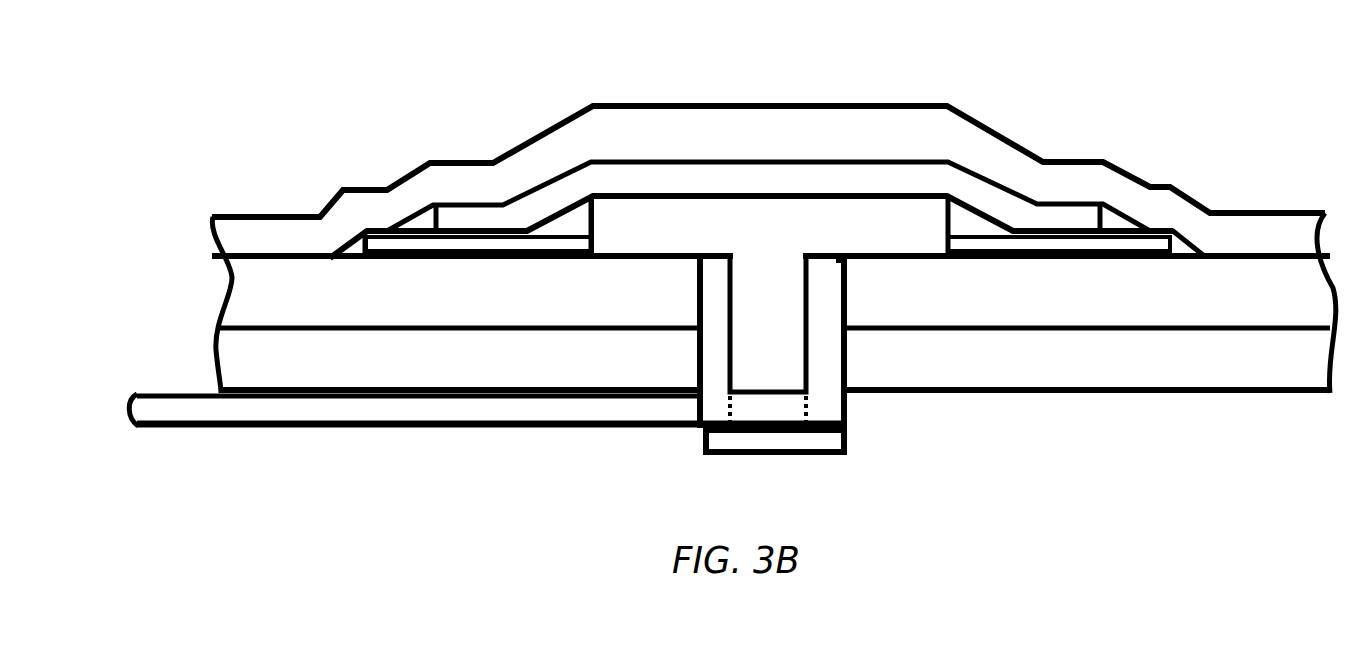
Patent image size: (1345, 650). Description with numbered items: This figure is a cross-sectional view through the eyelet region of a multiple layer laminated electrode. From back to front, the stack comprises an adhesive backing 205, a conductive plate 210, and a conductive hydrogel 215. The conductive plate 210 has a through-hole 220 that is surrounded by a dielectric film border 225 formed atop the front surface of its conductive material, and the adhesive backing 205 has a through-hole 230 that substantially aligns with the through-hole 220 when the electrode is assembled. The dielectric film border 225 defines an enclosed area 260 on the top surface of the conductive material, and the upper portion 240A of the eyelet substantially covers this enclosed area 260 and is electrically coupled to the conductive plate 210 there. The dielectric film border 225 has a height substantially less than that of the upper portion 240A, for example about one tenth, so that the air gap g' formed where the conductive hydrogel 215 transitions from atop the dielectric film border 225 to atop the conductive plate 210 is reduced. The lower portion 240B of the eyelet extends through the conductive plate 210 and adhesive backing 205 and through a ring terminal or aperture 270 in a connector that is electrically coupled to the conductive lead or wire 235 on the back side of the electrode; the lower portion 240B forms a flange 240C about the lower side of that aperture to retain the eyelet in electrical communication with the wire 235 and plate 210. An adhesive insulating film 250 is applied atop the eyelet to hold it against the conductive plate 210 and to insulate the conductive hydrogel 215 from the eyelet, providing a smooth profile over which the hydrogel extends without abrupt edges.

The adhesive backing 205 is at (775, 369).
The conductive plate 210 is at (774, 303).
The conductive hydrogel 215 is at (768, 180).
The through-hole 220 is at (847, 300).
The dielectric film border 225 is at (530, 243).
The through-hole 230 is at (847, 337).
The conductive lead or wire 235 is at (343, 410).
The upper portion of the eyelet 240A is at (770, 218).
The lower portion of the eyelet 240B is at (785, 353).
The flange 240C is at (773, 443).
The adhesive insulating film 250 is at (967, 188).
The enclosed area 260 is at (643, 253).
The ring terminal or aperture 270 is at (743, 403).
The air gap g' is at (350, 189).